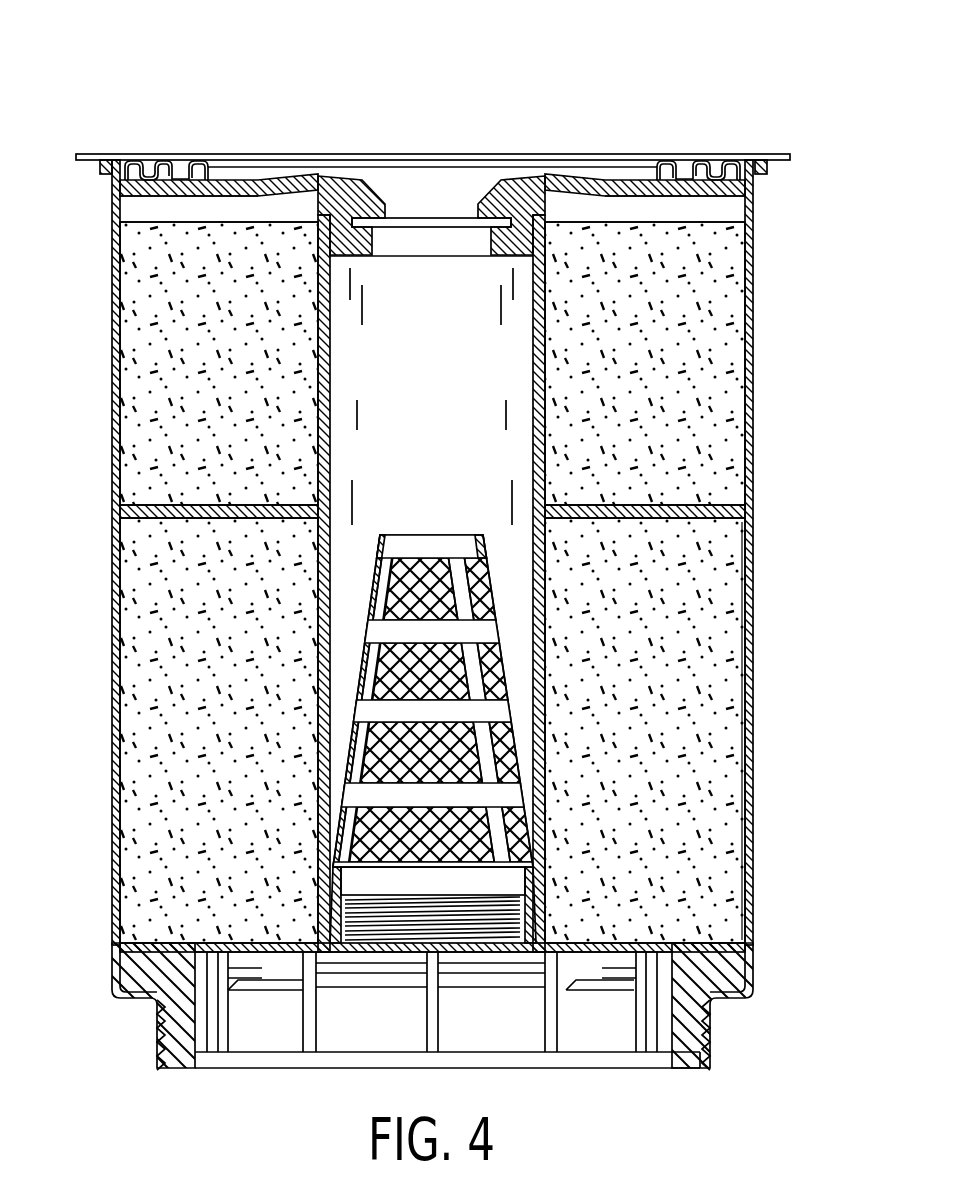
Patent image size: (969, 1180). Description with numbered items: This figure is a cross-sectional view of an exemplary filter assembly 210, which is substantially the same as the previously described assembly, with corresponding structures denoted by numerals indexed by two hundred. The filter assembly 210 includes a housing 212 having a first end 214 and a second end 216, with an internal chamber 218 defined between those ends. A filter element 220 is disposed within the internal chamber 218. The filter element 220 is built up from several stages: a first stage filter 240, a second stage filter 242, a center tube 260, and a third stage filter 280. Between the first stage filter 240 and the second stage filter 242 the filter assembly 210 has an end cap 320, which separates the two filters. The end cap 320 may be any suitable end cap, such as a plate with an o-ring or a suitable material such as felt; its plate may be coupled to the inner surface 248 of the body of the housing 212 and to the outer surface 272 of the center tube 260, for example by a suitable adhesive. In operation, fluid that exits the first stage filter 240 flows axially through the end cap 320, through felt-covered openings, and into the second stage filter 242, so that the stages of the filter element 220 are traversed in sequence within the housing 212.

The filter assembly 210 is at (803, 86).
The housing 212 is at (752, 428).
The first end 214 is at (760, 166).
The second end 216 is at (745, 997).
The internal chamber 218 is at (733, 208).
The filter element 220 is at (740, 600).
The first stage filter 240 is at (718, 332).
The second stage filter 242 is at (718, 748).
The inner surface 248 is at (748, 660).
The center tube 260 is at (320, 466).
The outer surface 272 is at (318, 400).
The third stage filter 280 is at (355, 880).
The end cap 320 is at (748, 510).